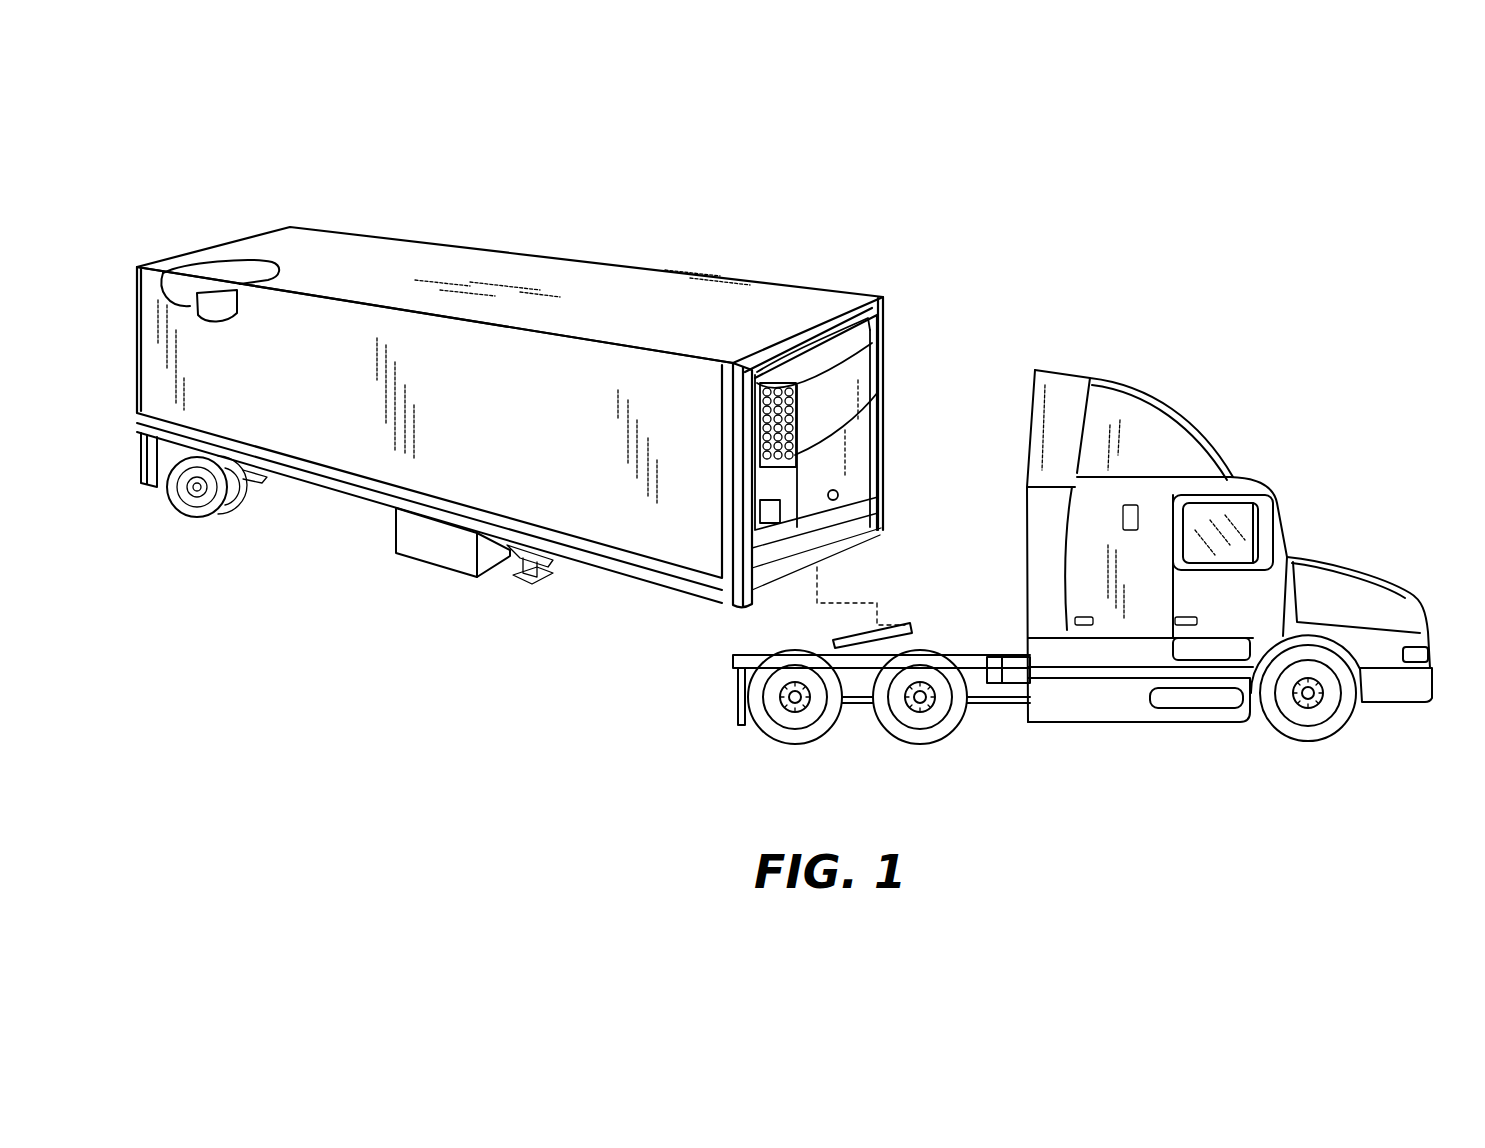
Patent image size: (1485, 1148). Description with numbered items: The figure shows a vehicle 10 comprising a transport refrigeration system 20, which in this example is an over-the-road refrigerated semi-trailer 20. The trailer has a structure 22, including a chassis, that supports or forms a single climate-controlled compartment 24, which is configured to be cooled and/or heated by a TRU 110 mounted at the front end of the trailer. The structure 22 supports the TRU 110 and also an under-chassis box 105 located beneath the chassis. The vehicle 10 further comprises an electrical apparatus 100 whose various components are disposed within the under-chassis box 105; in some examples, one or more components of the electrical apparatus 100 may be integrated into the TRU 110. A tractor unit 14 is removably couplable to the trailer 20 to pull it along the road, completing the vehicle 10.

The vehicle 10 is at (1246, 166).
The tractor unit 14 is at (1173, 440).
The transport refrigeration system 20 is at (584, 290).
The structure 22 is at (387, 503).
The climate-controlled compartment 24 is at (183, 290).
The electrical apparatus 100 is at (591, 672).
The under-chassis box 105 is at (423, 545).
The TRU 110 is at (855, 400).